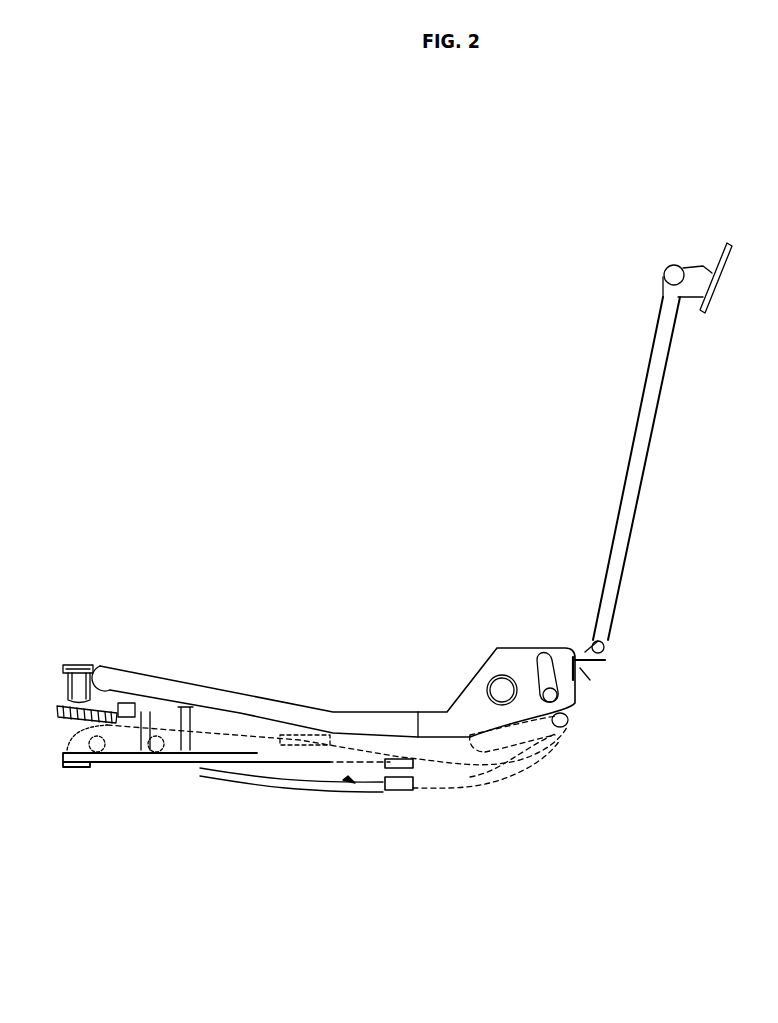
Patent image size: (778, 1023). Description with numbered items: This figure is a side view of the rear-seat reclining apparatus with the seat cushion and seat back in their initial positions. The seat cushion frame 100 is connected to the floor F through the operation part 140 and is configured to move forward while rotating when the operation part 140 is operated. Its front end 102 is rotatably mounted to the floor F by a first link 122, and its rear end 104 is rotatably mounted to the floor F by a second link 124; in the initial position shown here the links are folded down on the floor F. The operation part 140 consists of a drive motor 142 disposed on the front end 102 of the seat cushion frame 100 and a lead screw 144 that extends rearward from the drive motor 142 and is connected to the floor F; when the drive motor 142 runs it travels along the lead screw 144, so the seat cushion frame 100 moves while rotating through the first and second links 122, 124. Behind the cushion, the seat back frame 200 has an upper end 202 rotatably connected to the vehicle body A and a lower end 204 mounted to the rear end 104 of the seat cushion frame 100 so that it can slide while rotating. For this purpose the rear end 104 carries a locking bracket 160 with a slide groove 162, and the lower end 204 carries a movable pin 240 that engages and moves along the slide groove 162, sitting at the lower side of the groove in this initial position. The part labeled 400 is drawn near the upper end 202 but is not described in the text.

The seat cushion frame 100 is at (314, 720).
The front end 102 is at (137, 688).
The rear end 104 is at (430, 767).
The first link 122 is at (110, 765).
The second link 124 is at (500, 767).
The operation part 140 is at (312, 883).
The drive motor 142 is at (175, 765).
The lead screw 144 is at (305, 765).
The locking bracket 160 is at (503, 648).
The slide groove 162 is at (535, 648).
The seat back frame 200 is at (626, 535).
The upper end 202 is at (663, 310).
The lower end 204 is at (585, 663).
The movable pin 240 is at (556, 726).
The pad 400 is at (691, 292).
The vehicle body A is at (718, 252).
The floor F is at (356, 783).